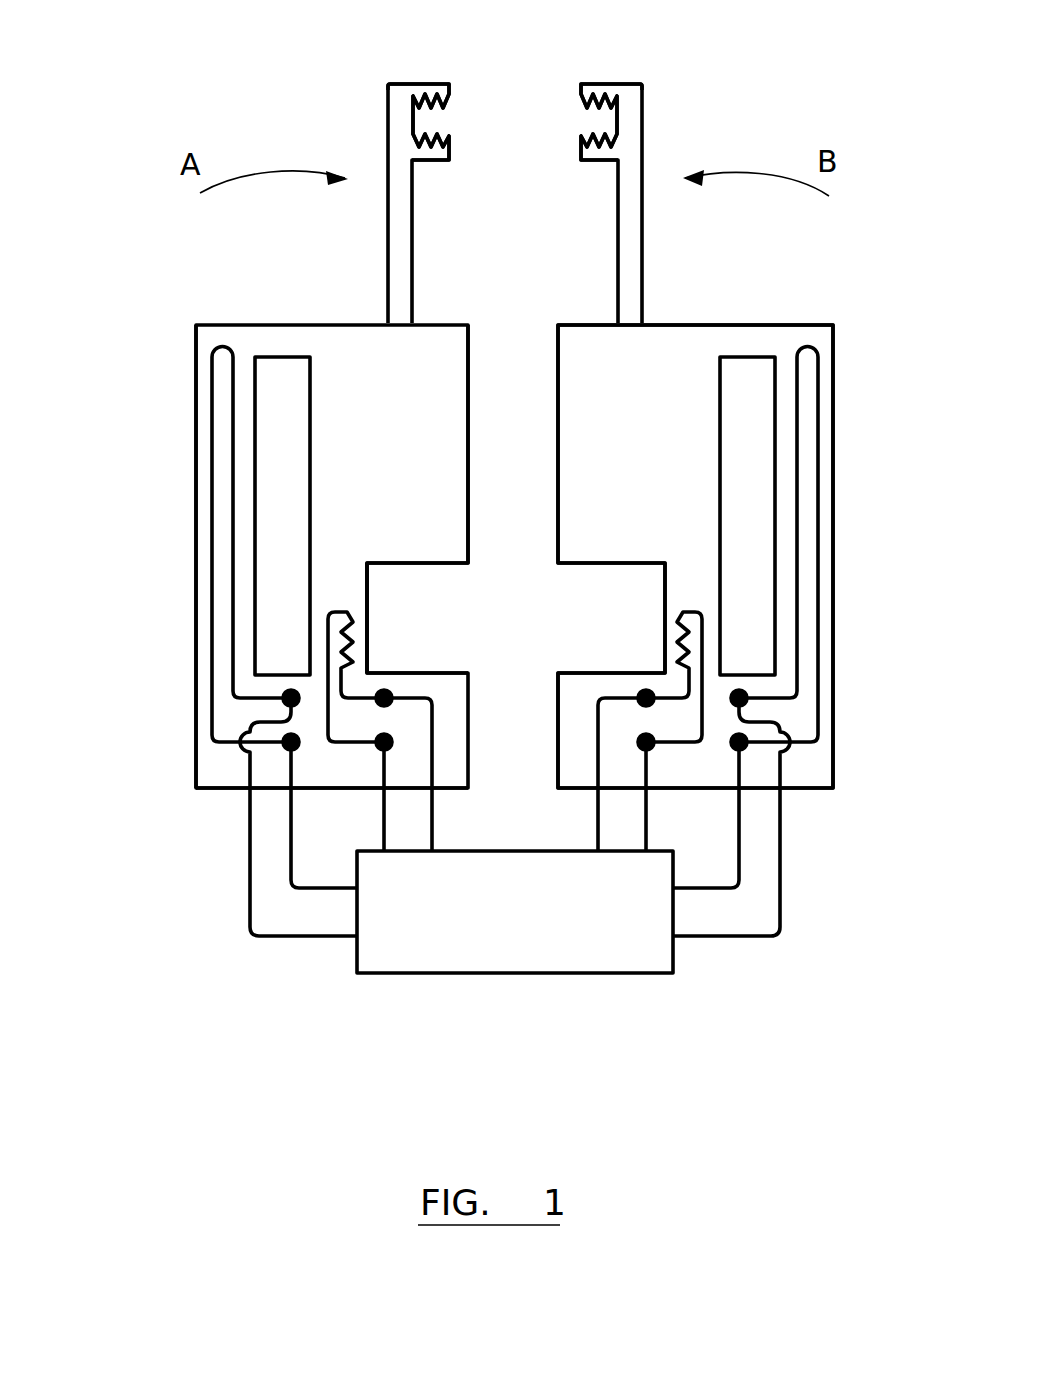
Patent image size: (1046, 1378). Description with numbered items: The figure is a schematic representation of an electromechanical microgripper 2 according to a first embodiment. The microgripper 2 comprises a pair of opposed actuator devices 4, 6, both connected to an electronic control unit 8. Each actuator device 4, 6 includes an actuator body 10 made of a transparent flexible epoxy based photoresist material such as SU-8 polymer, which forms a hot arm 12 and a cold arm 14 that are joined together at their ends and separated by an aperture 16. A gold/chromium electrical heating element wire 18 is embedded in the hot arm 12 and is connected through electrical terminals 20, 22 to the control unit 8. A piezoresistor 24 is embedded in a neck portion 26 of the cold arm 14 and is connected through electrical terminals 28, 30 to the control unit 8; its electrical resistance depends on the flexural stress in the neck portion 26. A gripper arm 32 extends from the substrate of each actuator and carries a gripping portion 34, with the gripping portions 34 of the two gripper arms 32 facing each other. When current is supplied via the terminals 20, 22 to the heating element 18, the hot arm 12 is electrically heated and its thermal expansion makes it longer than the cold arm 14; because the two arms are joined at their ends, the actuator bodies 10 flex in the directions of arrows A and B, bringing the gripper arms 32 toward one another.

The microgripper 2 is at (706, 292).
The actuator device 4 is at (205, 337).
The actuator device 6 is at (822, 341).
The electronic control unit 8 is at (612, 942).
The actuator body 10 is at (207, 767).
The hot arm 12 is at (205, 657).
The cold arm 14 is at (436, 526).
The aperture 16 is at (285, 462).
The electrical heating element wire 18 is at (210, 398).
The electrical terminal 20 is at (291, 690).
The electrical terminal 22 is at (291, 750).
The piezoresistor 24 is at (330, 612).
The neck portion 26 is at (372, 612).
The electrical terminal 28 is at (388, 686).
The electrical terminal 30 is at (384, 750).
The gripper arm 32 is at (378, 163).
The gripping portion 34 is at (403, 93).